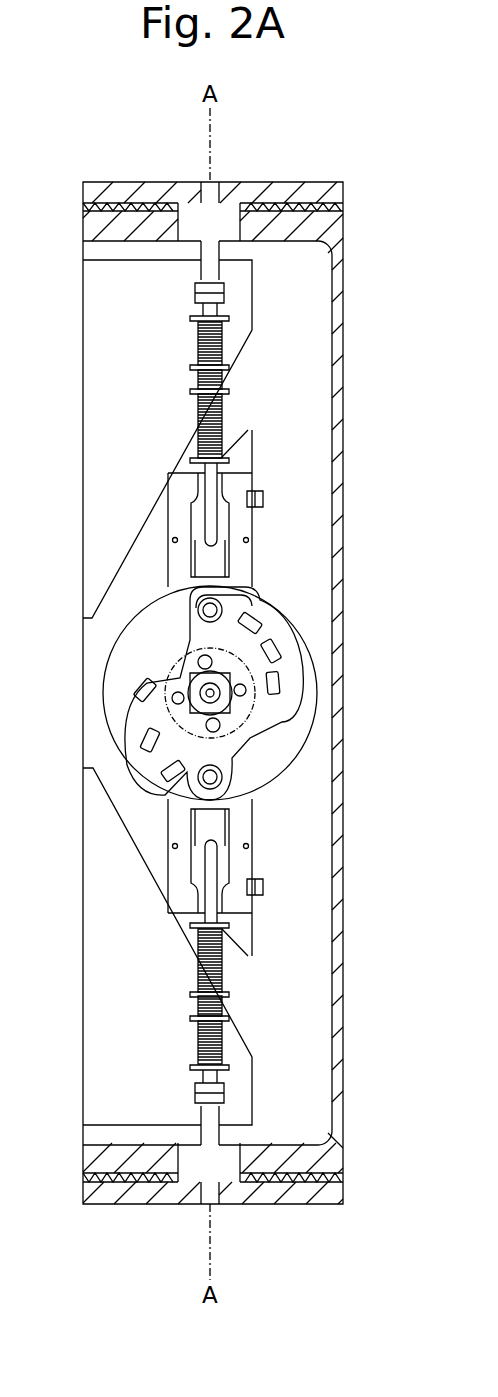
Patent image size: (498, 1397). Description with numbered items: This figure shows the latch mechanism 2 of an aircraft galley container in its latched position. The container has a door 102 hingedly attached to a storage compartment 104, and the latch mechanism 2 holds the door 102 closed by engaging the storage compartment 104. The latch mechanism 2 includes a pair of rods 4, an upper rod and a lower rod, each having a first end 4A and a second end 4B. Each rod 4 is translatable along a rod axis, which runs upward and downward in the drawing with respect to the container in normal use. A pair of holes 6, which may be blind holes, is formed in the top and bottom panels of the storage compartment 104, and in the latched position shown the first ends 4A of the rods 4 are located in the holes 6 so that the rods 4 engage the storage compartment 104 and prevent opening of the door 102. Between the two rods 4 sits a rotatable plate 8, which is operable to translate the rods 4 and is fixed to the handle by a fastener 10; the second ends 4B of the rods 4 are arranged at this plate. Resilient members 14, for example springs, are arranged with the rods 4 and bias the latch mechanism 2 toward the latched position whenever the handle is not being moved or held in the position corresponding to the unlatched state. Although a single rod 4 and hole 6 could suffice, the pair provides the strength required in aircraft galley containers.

The latch mechanism 2 is at (50, 450).
The door 102 is at (113, 328).
The storage compartment 104 is at (320, 186).
The hole 6 is at (215, 190).
The first end 4A is at (203, 235).
The rod 4 is at (223, 343).
The resilient member 14 is at (197, 1043).
The rotatable plate 8 is at (180, 632).
The second end 4B is at (243, 607).
The fastener 10 is at (180, 693).